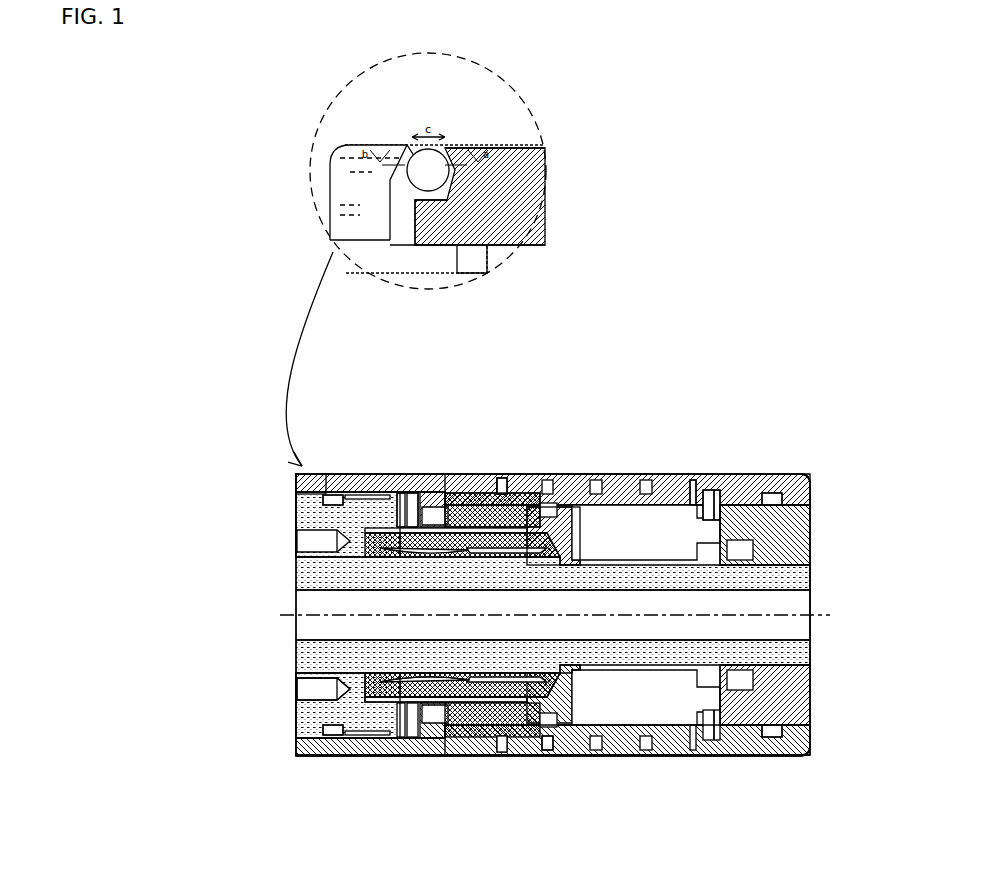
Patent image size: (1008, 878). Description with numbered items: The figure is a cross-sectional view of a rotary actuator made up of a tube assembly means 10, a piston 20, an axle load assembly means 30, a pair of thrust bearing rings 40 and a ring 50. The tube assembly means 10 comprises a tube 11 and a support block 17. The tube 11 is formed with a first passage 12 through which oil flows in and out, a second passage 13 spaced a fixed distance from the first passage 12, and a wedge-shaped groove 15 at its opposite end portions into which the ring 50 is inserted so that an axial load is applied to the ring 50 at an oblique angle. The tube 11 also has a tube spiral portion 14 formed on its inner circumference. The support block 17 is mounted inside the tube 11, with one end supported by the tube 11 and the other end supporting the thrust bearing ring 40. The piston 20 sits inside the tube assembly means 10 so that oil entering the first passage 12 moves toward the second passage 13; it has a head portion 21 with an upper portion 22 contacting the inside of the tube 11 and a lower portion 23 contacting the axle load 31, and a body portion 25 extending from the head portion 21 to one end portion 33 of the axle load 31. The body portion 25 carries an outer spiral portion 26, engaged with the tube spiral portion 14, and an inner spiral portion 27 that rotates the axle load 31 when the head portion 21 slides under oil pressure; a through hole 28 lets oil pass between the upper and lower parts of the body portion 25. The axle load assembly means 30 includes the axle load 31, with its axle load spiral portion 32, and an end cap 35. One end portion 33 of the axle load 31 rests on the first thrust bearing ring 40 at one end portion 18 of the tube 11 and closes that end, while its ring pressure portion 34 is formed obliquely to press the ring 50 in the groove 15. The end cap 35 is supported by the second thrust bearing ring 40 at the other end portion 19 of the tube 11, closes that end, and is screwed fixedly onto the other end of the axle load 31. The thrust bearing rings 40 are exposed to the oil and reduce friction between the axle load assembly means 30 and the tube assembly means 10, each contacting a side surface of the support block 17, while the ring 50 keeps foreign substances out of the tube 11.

The tube assembly means 10 is at (368, 773).
The tube 11 is at (645, 755).
The first passage 12 is at (500, 474).
The second passage 13 is at (695, 476).
The tube spiral portion 14 is at (545, 755).
The groove 15 is at (455, 185).
The support block 17 is at (717, 480).
The one end portion 18 is at (383, 474).
The other end portion 19 is at (737, 476).
The piston 20 is at (505, 616).
The head portion 21 is at (557, 677).
The upper portion 22 is at (580, 755).
The lower portion 23 is at (575, 672).
The body portion 25 is at (425, 677).
The outer spiral portion 26 is at (315, 705).
The inner spiral portion 27 is at (390, 677).
The through hole 28 is at (520, 474).
The axle load assembly means 30 is at (277, 563).
The axle load 31 is at (309, 662).
The axle load spiral portion 32 is at (557, 474).
The one end portion 33 is at (360, 474).
The ring pressure portion 34 is at (360, 175).
The end cap 35 is at (808, 488).
The thrust bearing ring 40 is at (397, 474).
The ring 50 is at (785, 478).